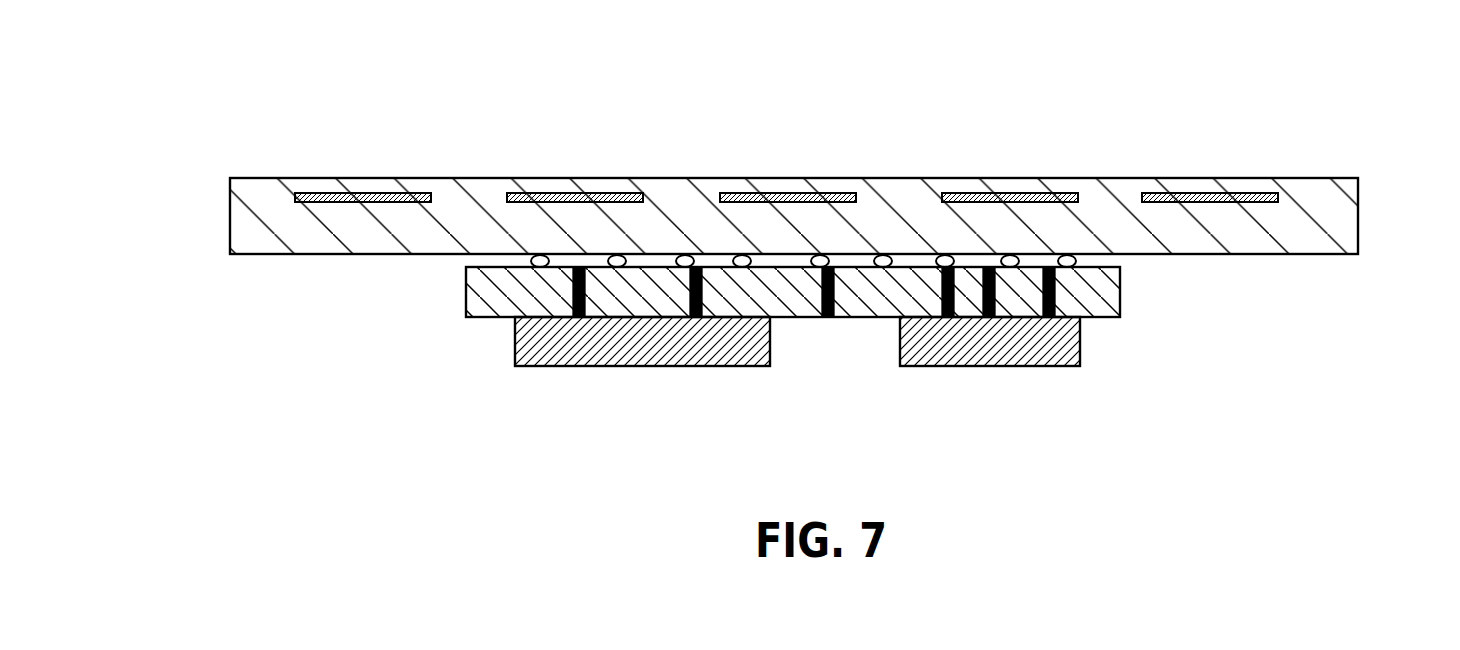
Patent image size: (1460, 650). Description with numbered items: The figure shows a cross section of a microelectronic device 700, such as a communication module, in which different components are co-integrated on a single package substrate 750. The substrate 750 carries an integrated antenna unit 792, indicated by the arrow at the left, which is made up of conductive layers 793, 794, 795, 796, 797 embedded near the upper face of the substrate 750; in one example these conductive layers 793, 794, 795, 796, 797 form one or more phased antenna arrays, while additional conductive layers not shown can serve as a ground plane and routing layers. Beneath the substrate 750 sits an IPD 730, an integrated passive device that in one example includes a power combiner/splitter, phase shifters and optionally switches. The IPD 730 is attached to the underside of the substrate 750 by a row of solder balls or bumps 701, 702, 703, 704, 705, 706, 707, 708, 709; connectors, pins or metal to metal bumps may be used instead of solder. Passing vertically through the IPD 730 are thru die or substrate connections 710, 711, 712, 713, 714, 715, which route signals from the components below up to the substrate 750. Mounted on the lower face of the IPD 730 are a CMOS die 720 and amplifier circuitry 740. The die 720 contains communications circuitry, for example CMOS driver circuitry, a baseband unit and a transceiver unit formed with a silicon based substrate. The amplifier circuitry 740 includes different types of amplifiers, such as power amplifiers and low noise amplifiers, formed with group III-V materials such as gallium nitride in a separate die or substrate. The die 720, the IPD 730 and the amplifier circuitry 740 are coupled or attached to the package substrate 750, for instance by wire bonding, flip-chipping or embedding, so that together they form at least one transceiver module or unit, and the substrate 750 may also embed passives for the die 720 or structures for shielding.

The microelectronic device 700 is at (792, 35).
The solder ball 701 is at (537, 261).
The solder ball 702 is at (618, 267).
The solder ball 703 is at (677, 261).
The solder ball 704 is at (738, 256).
The solder ball 705 is at (829, 267).
The solder ball 706 is at (878, 256).
The solder ball 707 is at (937, 257).
The solder ball 708 is at (1018, 258).
The solder ball 709 is at (1077, 261).
The thru die connection 710 is at (614, 257).
The thru die connection 711 is at (703, 290).
The thru die connection 712 is at (826, 305).
The thru die connection 713 is at (946, 292).
The thru die connection 714 is at (987, 268).
The thru die connection 715 is at (1056, 293).
The CMOS die 720 is at (723, 343).
The IPD 730 is at (787, 244).
The amplifier circuitry 740 is at (983, 350).
The package substrate 750 is at (1358, 197).
The integrated antenna unit 792 is at (775, 181).
The conductive layer 793 is at (368, 193).
The conductive layer 794 is at (578, 193).
The conductive layer 795 is at (777, 193).
The conductive layer 796 is at (1012, 193).
The conductive layer 797 is at (1185, 195).